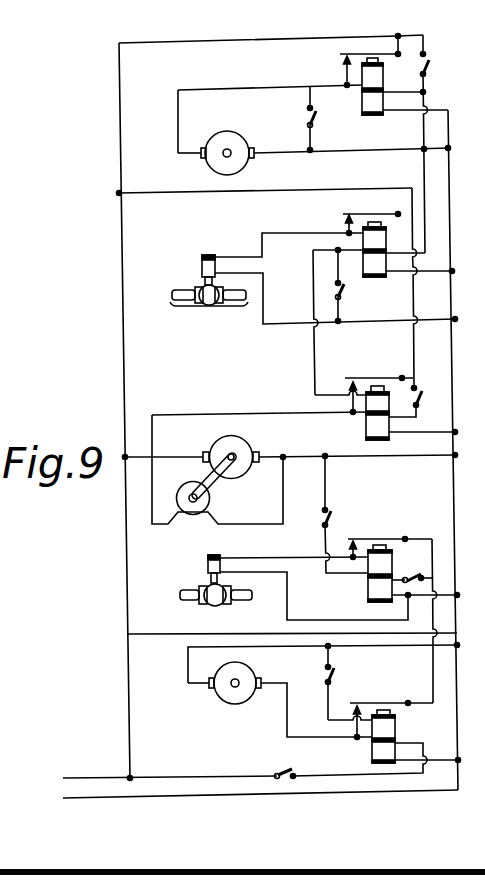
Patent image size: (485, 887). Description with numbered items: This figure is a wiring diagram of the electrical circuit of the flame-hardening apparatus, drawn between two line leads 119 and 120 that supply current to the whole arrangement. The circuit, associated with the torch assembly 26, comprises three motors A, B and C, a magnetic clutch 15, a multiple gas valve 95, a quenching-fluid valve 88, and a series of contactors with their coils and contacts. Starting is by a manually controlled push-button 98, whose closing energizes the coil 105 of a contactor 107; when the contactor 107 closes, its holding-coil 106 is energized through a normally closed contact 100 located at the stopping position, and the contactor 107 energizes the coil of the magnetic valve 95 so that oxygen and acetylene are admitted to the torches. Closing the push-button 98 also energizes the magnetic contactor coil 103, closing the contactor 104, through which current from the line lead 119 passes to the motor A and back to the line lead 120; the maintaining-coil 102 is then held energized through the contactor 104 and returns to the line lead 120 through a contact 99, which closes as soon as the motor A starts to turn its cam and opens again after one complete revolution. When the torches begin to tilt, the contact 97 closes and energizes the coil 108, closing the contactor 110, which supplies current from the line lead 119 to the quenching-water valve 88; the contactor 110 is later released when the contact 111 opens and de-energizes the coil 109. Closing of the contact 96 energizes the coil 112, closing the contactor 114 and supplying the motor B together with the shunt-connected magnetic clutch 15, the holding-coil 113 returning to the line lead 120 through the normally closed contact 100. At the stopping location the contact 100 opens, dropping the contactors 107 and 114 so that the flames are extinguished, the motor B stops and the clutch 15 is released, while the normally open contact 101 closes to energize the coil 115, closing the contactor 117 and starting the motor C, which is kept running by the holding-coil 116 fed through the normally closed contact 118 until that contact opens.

The torch assembly 26 is at (2, 280).
The push-button 98 is at (433, 52).
The contact 99 is at (314, 110).
The normally closed contact 100 is at (344, 291).
The normally open contact 101 is at (277, 770).
The maintaining-coil 102 is at (385, 76).
The magnetic contactor coil 103 is at (364, 104).
The contactor 104 is at (358, 66).
The coil 105 is at (368, 264).
The holding-coil 106 is at (386, 242).
The contactor 107 is at (380, 216).
The coil 108 is at (367, 592).
The coil 109 is at (367, 567).
The contactor 110 is at (378, 538).
The contact 111 is at (333, 516).
The coil 112 is at (368, 430).
The holding-coil 113 is at (390, 407).
The contactor 114 is at (384, 378).
The coil 115 is at (370, 753).
The holding-coil 116 is at (398, 729).
The contactor 117 is at (374, 702).
The normally closed contact 118 is at (337, 676).
The line lead 119 is at (82, 775).
The line lead 120 is at (67, 798).
The multiple valve 95 is at (213, 307).
The valve 88 is at (214, 604).
The magnetically-actuable clutch 15 is at (211, 499).
The electric contact 96 is at (421, 401).
The electric contact 97 is at (407, 575).
The motor A is at (238, 132).
The motor B is at (241, 438).
The motor C is at (219, 702).